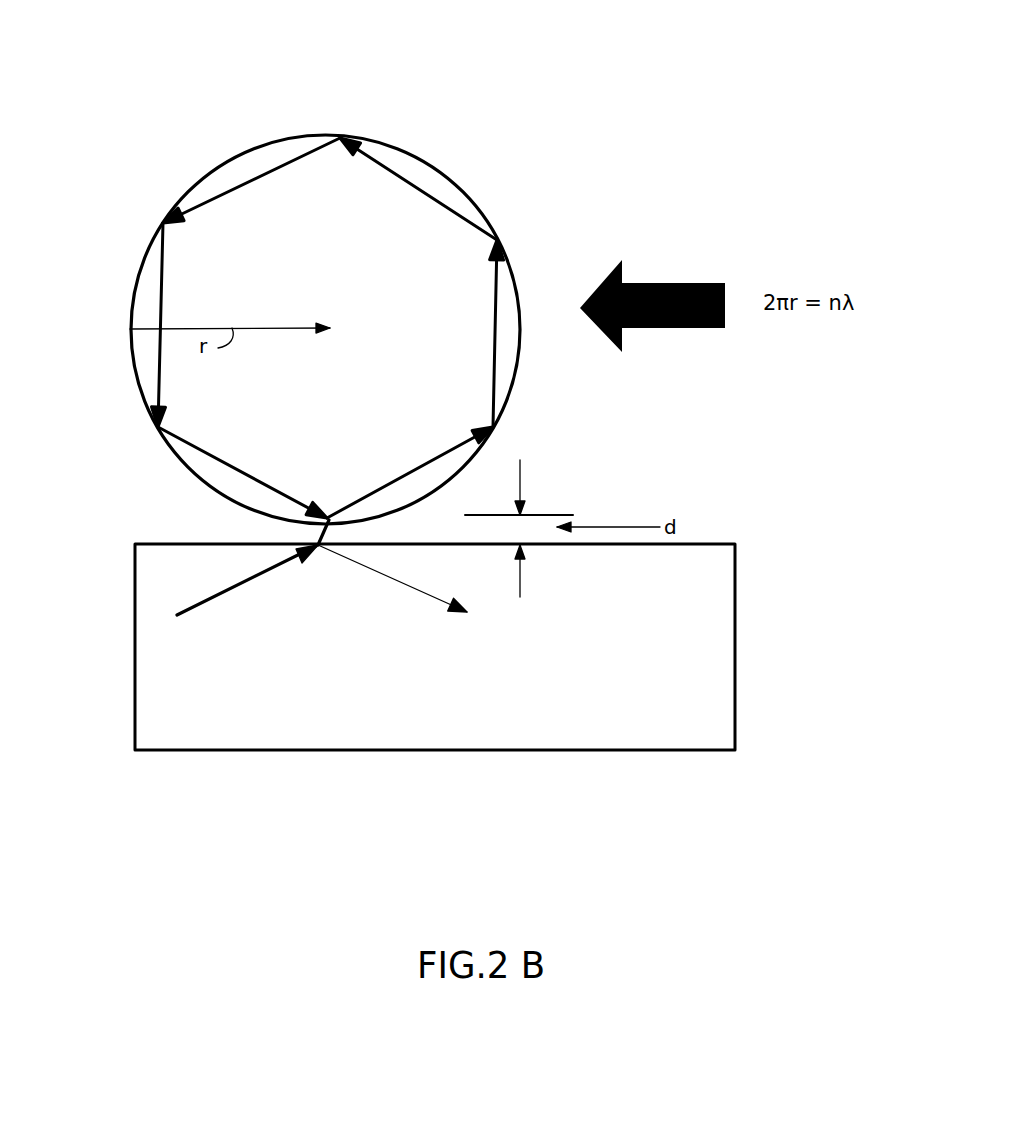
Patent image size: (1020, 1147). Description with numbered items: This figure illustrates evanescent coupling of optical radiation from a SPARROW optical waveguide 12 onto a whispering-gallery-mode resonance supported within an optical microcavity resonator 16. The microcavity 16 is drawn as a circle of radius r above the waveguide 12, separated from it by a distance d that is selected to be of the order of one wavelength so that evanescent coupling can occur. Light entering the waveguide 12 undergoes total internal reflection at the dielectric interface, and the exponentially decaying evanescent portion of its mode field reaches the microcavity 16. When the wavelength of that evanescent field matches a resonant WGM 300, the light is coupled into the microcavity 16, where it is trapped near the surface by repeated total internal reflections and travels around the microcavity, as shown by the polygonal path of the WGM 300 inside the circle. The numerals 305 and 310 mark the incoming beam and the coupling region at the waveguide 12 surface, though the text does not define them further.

The optical microcavity resonator 16 is at (353, 193).
The resonant WGM 300 is at (245, 182).
The SPARROW optical waveguide 12 is at (217, 730).
The incident light beam 305 is at (223, 587).
The coupling region 310 is at (307, 543).